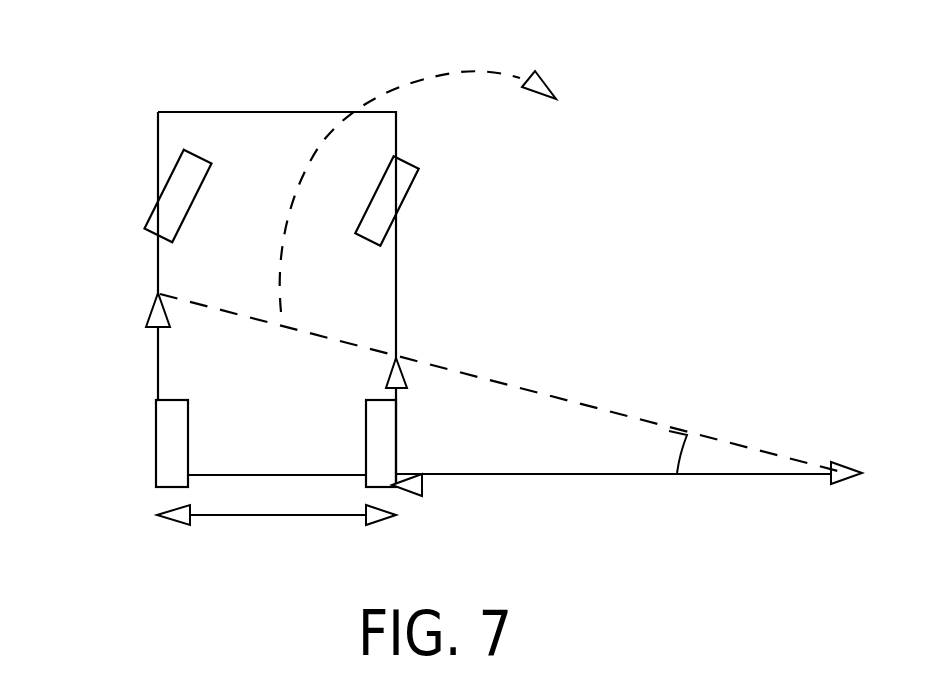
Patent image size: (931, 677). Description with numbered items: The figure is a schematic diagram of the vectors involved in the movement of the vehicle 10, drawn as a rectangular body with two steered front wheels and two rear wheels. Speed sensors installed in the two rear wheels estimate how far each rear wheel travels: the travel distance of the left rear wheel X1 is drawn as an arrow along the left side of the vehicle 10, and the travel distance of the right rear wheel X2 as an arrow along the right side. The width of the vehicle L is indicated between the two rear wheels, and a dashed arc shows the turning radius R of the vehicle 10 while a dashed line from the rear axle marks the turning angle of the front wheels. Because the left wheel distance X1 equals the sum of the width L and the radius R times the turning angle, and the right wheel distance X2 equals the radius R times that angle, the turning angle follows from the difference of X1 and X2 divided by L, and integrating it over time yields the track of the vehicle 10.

The vehicle 10 is at (157, 128).
The travel distance of the left rear wheel X1 is at (134, 347).
The travel distance of the right rear wheel X2 is at (359, 408).
The width of the vehicle L is at (276, 543).
The turning radius of the vehicle R is at (418, 165).